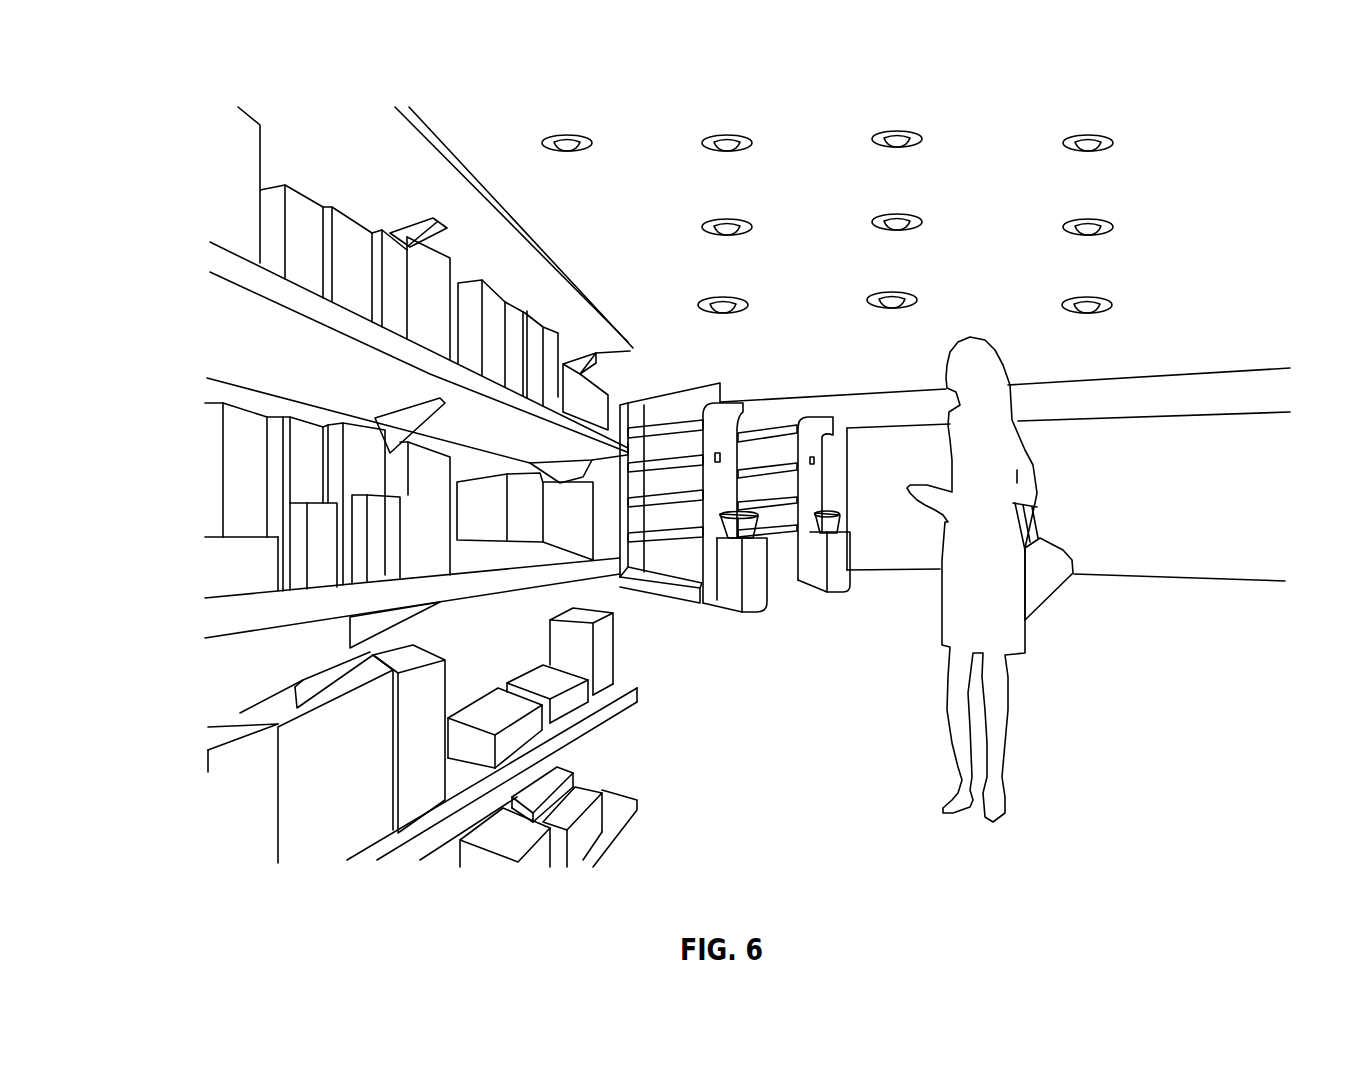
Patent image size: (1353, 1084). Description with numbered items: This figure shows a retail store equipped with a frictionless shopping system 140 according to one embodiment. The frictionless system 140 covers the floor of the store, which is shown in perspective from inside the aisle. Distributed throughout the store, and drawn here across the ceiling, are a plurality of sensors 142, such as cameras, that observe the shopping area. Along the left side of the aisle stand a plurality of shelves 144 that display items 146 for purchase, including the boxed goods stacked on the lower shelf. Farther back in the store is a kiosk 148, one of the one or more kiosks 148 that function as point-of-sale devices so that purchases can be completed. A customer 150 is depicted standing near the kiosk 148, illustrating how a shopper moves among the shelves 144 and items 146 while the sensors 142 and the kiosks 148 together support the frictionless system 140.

The frictionless system 140 is at (200, 130).
The sensors 142 is at (1168, 197).
The shelves 144 is at (532, 229).
The items 146 is at (567, 703).
The kiosks 148 is at (755, 582).
The customer 150 is at (1028, 452).